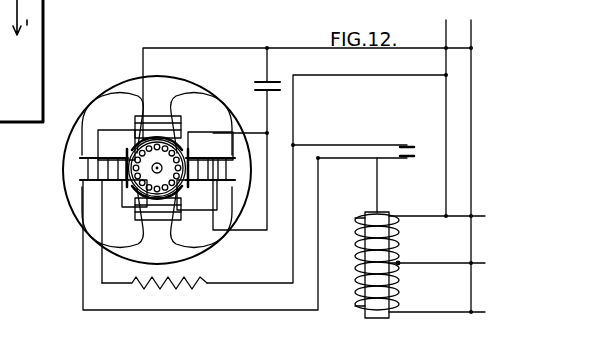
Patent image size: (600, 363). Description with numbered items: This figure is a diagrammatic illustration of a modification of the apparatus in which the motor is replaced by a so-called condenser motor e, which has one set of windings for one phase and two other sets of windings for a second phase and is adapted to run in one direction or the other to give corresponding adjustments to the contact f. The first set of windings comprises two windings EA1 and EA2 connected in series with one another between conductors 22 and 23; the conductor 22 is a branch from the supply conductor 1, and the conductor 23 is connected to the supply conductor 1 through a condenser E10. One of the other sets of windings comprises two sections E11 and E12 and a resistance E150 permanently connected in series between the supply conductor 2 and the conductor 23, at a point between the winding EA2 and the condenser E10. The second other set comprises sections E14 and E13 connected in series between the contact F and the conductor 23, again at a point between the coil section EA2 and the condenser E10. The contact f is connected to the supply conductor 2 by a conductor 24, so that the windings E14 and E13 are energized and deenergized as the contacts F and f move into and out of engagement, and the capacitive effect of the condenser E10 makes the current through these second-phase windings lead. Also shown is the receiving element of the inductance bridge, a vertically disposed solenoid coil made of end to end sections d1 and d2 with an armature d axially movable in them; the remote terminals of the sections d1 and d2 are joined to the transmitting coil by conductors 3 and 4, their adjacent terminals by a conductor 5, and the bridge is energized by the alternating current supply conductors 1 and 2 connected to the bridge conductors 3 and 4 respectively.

The alternating current supply conductor 1 is at (470, 103).
The alternating current supply conductor 2 is at (444, 97).
The bridge conductor 3 is at (433, 312).
The bridge conductor 4 is at (418, 217).
The conductor 5 is at (428, 262).
The conductor 22 is at (213, 49).
The conductor 23 is at (262, 232).
The conductor 24 is at (323, 146).
The condenser motor e is at (122, 88).
The condenser E10 is at (258, 90).
The winding section E11 is at (107, 155).
The winding section E12 is at (207, 142).
The winding section E13 is at (95, 157).
The winding section E14 is at (176, 200).
The resistance E150 is at (192, 286).
The winding EA1 is at (150, 128).
The winding EA2 is at (140, 203).
The contact f is at (405, 146).
The contact F is at (406, 158).
The armature d is at (360, 263).
The coil section d1 is at (358, 306).
The coil section d2 is at (358, 218).